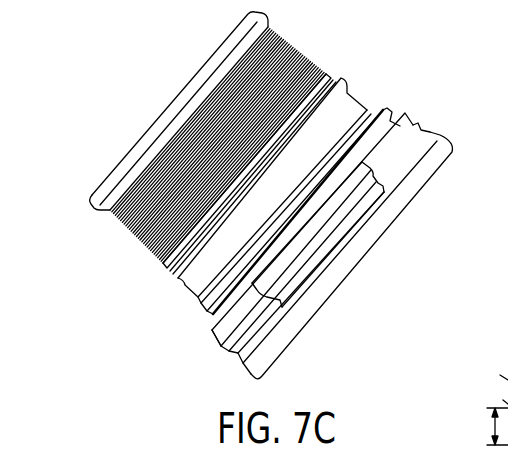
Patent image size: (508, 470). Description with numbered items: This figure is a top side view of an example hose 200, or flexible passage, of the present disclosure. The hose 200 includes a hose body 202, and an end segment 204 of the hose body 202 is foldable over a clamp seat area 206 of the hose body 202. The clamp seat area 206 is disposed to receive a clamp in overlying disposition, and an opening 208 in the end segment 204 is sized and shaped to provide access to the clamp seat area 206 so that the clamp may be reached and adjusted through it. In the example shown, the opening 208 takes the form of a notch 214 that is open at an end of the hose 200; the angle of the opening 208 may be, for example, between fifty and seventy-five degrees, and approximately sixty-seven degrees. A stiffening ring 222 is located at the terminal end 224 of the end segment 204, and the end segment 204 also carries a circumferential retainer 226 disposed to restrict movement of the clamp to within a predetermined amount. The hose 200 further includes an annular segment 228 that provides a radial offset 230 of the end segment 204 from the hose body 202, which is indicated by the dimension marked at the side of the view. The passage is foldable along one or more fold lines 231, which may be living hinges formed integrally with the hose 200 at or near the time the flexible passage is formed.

The hose 200 is at (286, 36).
The hose body 202 is at (312, 68).
The end segment 204 is at (447, 138).
The clamp seat area 206 is at (355, 182).
The opening 208 is at (341, 240).
The notch 214 is at (347, 272).
The stiffening ring 222 is at (253, 283).
The terminal end 224 is at (208, 333).
The circumferential retainer 226 is at (421, 126).
The annular segment 228 is at (507, 397).
The radial offset 230 is at (487, 422).
The fold lines 231 is at (495, 362).